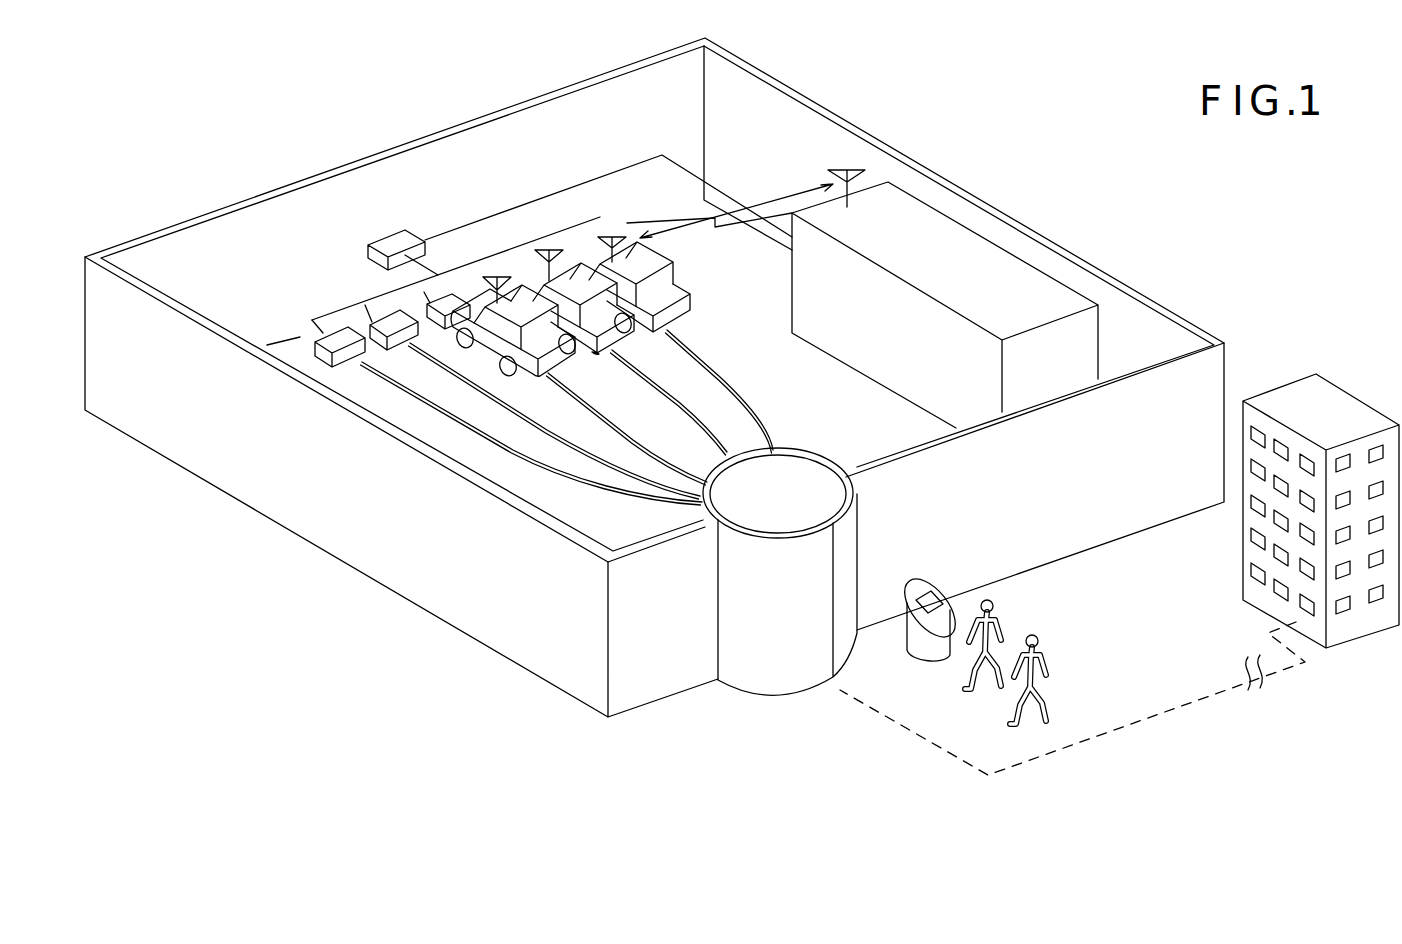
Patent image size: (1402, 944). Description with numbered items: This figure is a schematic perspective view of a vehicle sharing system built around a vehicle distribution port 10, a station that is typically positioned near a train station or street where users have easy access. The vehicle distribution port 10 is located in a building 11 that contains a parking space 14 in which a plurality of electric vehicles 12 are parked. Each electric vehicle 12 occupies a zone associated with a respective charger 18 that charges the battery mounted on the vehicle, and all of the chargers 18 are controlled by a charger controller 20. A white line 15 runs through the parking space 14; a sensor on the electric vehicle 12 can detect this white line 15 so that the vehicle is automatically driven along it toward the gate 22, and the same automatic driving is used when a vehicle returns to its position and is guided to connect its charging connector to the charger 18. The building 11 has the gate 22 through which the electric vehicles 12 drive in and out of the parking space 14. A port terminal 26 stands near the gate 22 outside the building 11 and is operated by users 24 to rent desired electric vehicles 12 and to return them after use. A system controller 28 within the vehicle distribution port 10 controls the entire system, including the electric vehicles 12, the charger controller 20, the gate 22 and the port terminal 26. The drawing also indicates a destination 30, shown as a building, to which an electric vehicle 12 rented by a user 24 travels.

The vehicle distribution port 10 is at (1012, 193).
The building 11 is at (1207, 378).
The electric vehicle 12 is at (548, 370).
The parking space 14 is at (600, 495).
The white line 15 is at (514, 446).
The charger 18 is at (320, 336).
The charger controller 20 is at (410, 238).
The gate 22 is at (846, 548).
The user 24 is at (997, 598).
The port terminal 26 is at (943, 617).
The system controller 28 is at (1058, 293).
The destination 30 is at (1318, 393).